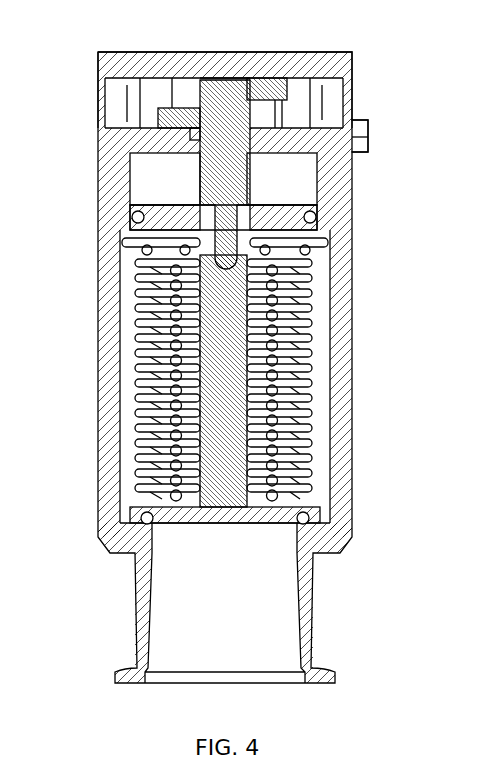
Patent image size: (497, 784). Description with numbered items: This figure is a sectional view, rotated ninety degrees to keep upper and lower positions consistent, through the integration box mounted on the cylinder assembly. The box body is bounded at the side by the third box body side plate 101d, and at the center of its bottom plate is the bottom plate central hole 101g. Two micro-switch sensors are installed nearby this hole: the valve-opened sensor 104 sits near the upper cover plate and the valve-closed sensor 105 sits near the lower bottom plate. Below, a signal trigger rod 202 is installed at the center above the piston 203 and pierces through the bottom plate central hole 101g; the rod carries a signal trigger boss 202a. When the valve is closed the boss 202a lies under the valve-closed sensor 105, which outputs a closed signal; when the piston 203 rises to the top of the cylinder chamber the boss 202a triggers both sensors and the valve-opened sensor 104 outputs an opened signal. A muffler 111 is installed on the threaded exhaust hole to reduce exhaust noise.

The valve-closed sensor 105 is at (185, 110).
The valve-opened sensor 104 is at (265, 88).
The third box body side plate 101d is at (352, 100).
The muffler 111 is at (366, 130).
The signal trigger boss 202a is at (195, 133).
The signal trigger rod 202 is at (215, 172).
The piston 203 is at (163, 215).
The bottom plate central hole 101g is at (250, 146).